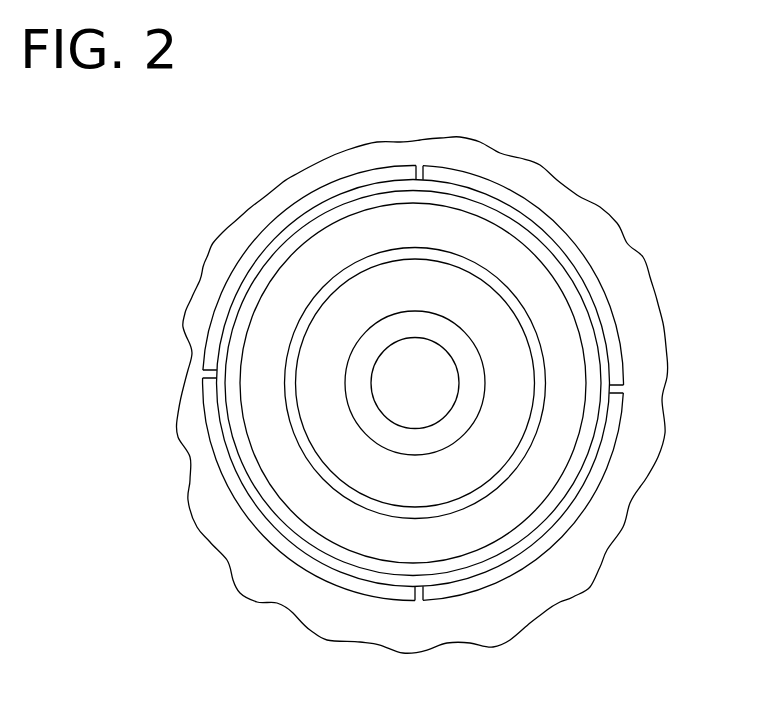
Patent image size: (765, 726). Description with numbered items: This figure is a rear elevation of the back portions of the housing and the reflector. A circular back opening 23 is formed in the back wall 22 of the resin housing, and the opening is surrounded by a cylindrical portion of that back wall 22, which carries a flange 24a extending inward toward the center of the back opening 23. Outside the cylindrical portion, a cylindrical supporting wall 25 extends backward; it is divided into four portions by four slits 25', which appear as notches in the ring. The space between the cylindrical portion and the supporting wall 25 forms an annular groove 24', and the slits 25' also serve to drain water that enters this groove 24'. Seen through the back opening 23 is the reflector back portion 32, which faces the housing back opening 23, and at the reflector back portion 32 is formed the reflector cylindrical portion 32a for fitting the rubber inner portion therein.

The back wall 22 is at (277, 587).
The circular back opening 23 is at (550, 480).
The annular groove 24' is at (360, 428).
The flange 24a is at (587, 443).
The cylindrical supporting wall 25 is at (452, 391).
The slits 25' is at (359, 385).
The reflector back portion 32 is at (475, 283).
The reflector cylindrical portion 32a is at (580, 358).